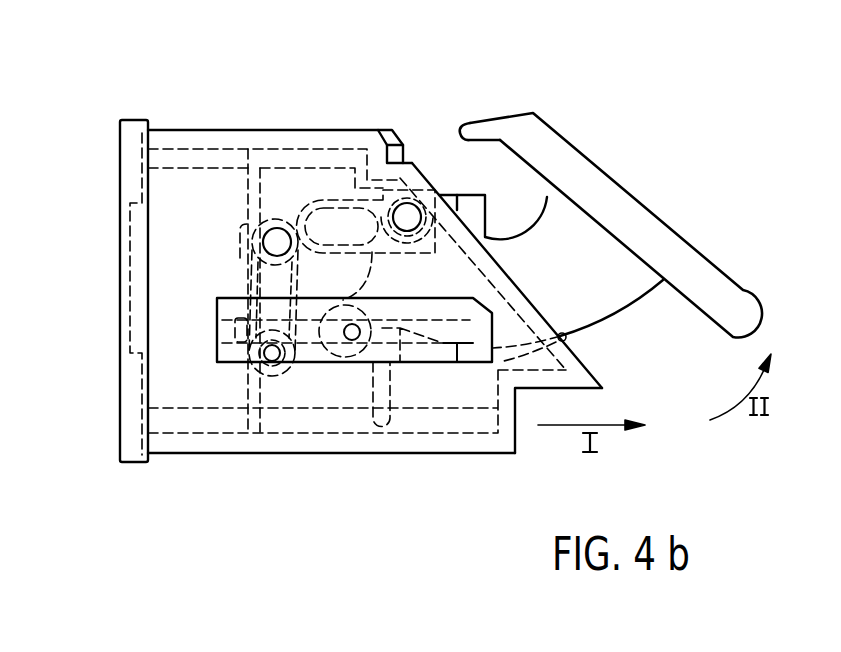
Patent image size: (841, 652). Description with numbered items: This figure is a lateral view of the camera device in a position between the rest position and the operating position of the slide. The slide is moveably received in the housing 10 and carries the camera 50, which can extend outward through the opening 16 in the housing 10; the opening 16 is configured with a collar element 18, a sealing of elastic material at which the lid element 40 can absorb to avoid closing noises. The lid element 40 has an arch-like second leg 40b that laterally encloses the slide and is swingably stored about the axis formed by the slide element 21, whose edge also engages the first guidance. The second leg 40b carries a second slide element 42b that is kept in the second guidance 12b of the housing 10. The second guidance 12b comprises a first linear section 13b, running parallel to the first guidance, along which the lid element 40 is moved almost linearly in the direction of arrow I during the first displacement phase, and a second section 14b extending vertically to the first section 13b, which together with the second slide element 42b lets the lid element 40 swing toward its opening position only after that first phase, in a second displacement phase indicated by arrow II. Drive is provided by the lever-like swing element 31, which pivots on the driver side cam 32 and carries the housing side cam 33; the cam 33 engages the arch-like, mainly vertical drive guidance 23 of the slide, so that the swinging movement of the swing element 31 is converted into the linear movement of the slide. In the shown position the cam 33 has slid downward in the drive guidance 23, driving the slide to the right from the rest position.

The housing 10 is at (200, 113).
The second guidance 12b is at (342, 225).
The first section of the second guidance 13b is at (295, 192).
The second section of the second guidance 14b is at (410, 160).
The second slide element 42b is at (410, 212).
The camera 50 is at (500, 208).
The second leg 40b is at (560, 230).
The lid element 40 is at (678, 253).
The driver side cam 32 is at (277, 242).
The swing element 31 is at (262, 262).
The drive guidance 23 is at (267, 285).
The housing side cam 33 is at (268, 360).
The slide element 21 is at (353, 332).
The opening 16 is at (598, 352).
The collar element 18 is at (603, 372).